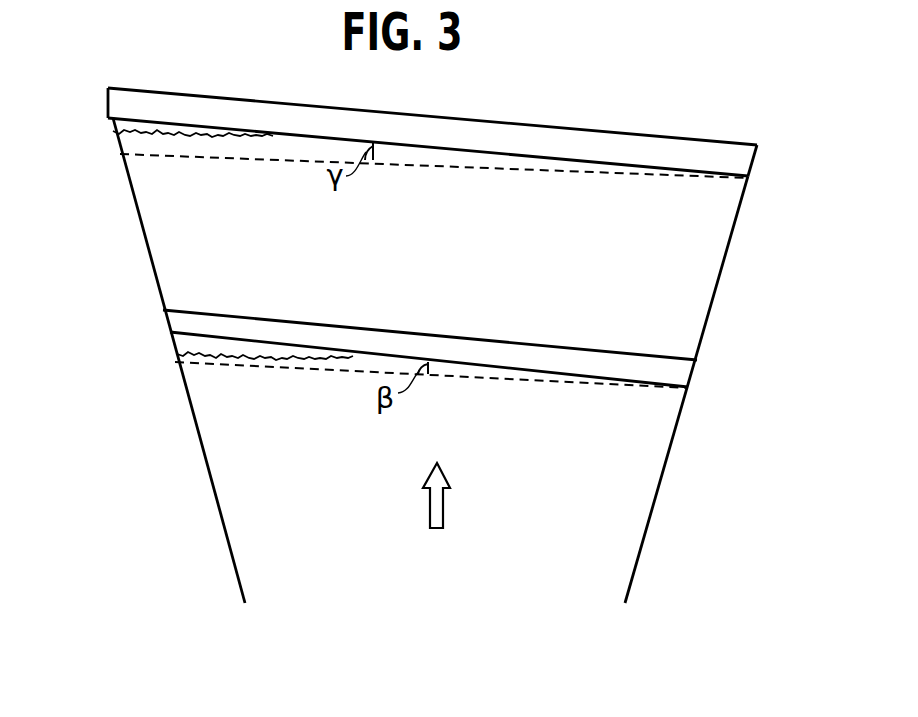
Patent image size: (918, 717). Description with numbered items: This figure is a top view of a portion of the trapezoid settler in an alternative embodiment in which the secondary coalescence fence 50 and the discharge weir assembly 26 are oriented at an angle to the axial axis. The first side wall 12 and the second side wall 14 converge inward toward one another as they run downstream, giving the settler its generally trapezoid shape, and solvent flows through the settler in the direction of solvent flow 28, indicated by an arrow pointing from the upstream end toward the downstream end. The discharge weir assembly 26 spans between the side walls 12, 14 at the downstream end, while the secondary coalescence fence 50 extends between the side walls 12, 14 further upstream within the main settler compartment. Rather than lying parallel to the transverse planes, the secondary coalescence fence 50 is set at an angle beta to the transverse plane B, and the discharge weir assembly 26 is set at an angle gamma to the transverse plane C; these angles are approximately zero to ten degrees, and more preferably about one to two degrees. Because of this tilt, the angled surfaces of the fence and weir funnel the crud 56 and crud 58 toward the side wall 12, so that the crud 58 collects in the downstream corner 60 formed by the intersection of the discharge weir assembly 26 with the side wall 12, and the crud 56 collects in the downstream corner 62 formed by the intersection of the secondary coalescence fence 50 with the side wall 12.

The side wall 12 is at (200, 443).
The side wall 14 is at (672, 448).
The discharge weir assembly 26 is at (745, 162).
The direction of solvent flow 28 is at (438, 495).
The secondary coalescence fence 50 is at (424, 331).
The crud 56 is at (187, 352).
The crud 58 is at (117, 148).
The downstream corner 60 is at (108, 117).
The downstream corner 62 is at (168, 331).
The transverse plane B is at (620, 388).
The transverse plane C is at (670, 178).